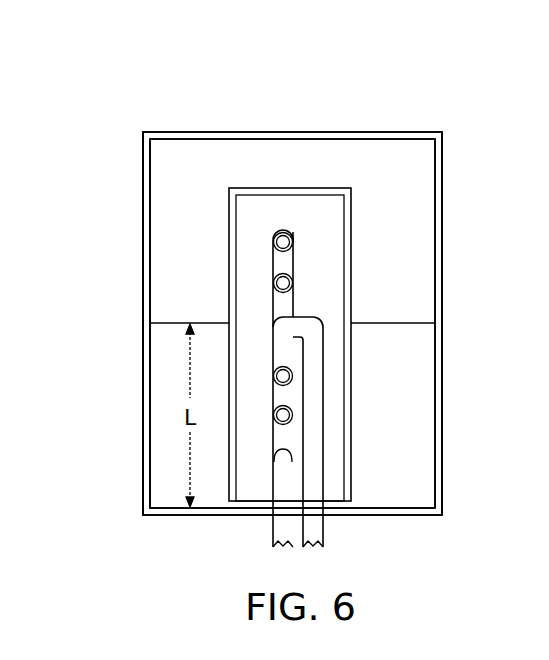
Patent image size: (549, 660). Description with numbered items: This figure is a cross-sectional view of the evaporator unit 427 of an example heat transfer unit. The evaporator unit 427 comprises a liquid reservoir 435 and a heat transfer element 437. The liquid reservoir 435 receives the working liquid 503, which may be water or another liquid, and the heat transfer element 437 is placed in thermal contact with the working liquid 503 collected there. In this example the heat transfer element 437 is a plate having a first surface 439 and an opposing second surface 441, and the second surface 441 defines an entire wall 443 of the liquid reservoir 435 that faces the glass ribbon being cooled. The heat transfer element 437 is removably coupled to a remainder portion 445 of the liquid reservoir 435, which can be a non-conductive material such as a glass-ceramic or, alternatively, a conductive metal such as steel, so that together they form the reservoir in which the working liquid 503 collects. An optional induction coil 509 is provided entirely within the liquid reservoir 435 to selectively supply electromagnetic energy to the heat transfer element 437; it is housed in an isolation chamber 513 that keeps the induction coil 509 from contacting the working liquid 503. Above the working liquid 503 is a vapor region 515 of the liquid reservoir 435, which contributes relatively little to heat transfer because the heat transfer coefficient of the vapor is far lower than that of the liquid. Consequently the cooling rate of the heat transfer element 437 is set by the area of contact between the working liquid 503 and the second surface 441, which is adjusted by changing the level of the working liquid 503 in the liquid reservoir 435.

The evaporator unit 427 is at (432, 103).
The liquid reservoir 435 is at (119, 133).
The heat transfer element 437 is at (143, 428).
The first surface 439 is at (143, 275).
The second surface 441 is at (150, 178).
The wall 443 is at (143, 202).
The remainder portion 445 is at (442, 198).
The working liquid 503 is at (381, 323).
The induction coil 509 is at (323, 443).
The isolation chamber 513 is at (333, 188).
The vapor region 515 is at (297, 157).